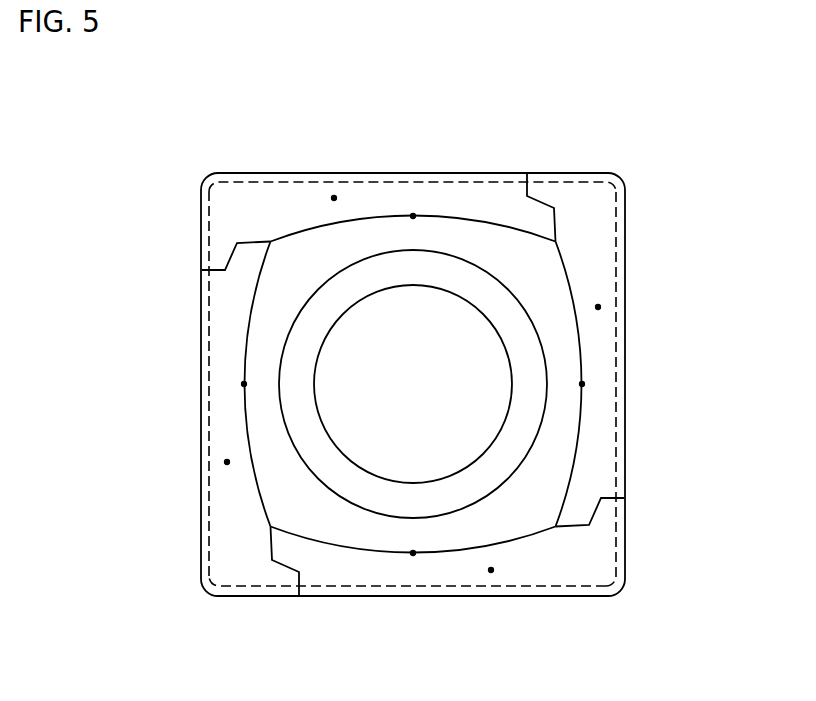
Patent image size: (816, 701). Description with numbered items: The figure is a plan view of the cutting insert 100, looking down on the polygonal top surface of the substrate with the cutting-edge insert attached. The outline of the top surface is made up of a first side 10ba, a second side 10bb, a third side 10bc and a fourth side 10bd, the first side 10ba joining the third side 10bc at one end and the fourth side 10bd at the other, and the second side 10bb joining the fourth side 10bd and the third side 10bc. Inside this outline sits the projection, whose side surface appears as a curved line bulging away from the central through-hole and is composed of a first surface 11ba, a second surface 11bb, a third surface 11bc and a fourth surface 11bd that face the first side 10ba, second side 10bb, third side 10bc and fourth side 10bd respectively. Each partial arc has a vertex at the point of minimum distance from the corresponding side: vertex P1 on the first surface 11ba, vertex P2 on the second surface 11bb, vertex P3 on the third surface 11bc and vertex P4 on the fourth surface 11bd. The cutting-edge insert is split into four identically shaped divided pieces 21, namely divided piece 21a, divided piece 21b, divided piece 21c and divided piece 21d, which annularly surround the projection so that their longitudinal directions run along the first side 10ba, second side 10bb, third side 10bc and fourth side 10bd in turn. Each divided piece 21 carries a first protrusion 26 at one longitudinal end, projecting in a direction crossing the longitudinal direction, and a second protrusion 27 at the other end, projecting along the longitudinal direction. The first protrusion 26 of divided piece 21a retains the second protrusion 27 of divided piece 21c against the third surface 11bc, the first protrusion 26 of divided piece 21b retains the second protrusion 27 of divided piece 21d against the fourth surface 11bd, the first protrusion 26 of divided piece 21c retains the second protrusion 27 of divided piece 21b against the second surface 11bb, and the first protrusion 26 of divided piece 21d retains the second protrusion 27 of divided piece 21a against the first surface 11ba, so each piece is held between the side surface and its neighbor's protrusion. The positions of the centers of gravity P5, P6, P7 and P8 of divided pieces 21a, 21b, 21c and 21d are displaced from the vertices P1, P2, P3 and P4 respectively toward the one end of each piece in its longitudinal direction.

The cutting insert 100 is at (694, 97).
The divided piece 21 is at (415, 385).
The divided piece 21a is at (557, 571).
The divided piece 21b is at (256, 203).
The divided piece 21c is at (585, 213).
The divided piece 21d is at (225, 533).
The first side 10ba is at (365, 587).
The second side 10bb is at (467, 183).
The third side 10bc is at (617, 438).
The fourth side 10bd is at (210, 327).
The first surface 11ba is at (309, 542).
The second surface 11bb is at (521, 234).
The third surface 11bc is at (568, 493).
The fourth surface 11bd is at (257, 275).
The first protrusion 26 is at (603, 513).
The second protrusion 27 is at (271, 549).
The vertex P1 is at (413, 554).
The vertex P2 is at (413, 215).
The vertex P3 is at (582, 384).
The vertex P4 is at (244, 384).
The position of the center of gravity P5 is at (491, 572).
The position of the center of gravity P6 is at (333, 196).
The position of the center of gravity P7 is at (598, 307).
The position of the center of gravity P8 is at (227, 462).